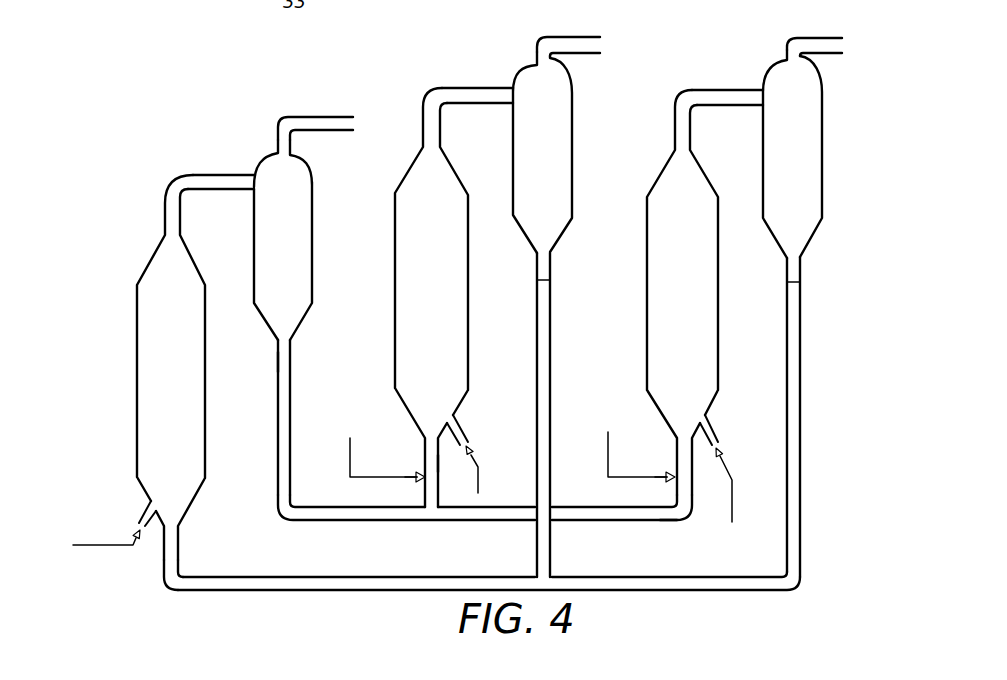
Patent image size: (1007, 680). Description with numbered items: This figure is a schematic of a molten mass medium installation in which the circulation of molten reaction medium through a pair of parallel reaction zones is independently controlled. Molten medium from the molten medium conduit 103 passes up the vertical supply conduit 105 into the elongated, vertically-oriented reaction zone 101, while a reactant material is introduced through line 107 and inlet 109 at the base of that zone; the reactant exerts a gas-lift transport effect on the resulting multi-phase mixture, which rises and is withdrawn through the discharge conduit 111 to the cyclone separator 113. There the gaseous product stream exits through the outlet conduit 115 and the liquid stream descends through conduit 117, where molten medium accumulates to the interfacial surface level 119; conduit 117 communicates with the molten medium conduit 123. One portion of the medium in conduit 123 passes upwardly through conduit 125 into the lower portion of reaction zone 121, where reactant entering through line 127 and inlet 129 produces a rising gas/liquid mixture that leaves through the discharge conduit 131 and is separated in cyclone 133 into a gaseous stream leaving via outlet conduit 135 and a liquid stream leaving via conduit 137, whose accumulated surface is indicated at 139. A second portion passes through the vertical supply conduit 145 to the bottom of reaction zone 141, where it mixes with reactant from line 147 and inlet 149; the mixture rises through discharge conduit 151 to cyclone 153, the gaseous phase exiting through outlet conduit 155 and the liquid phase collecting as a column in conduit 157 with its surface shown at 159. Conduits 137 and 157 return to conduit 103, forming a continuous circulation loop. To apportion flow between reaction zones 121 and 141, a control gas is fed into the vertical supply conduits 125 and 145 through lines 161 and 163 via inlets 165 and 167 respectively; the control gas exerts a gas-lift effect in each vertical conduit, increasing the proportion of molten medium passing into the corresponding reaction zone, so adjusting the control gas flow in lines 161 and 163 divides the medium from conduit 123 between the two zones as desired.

The reaction zone 101 is at (160, 362).
The molten medium conduit 103 is at (283, 580).
The vertical supply conduit 105 is at (172, 556).
The line 107 is at (108, 528).
The inlet 109 is at (149, 497).
The discharge conduit 111 is at (217, 185).
The cyclone separator 113 is at (302, 227).
The outlet conduit 115 is at (318, 120).
The conduit 117 is at (283, 418).
The interfacial surface level 119 is at (282, 362).
The reaction zone 121 is at (408, 293).
The molten medium conduit 123 is at (408, 513).
The vertical supply conduit 125 is at (433, 463).
The line 127 is at (480, 482).
The inlet 129 is at (456, 413).
The discharge conduit 131 is at (467, 95).
The cyclone 133 is at (562, 128).
The outlet conduit 135 is at (553, 43).
The conduit 137 is at (547, 345).
The surface of liquid medium 139 is at (547, 280).
The reaction zone 141 is at (672, 255).
The vertical supply conduit 145 is at (667, 513).
The line 147 is at (733, 507).
The inlet 149 is at (708, 417).
The discharge conduit 151 is at (735, 97).
The cyclone 153 is at (783, 145).
The outlet conduit 155 is at (810, 42).
The conduit 157 is at (795, 383).
The surface of the molten medium 159 is at (792, 282).
The line 161 is at (349, 460).
The line 163 is at (610, 445).
The inlet 165 is at (422, 482).
The inlet 167 is at (672, 483).